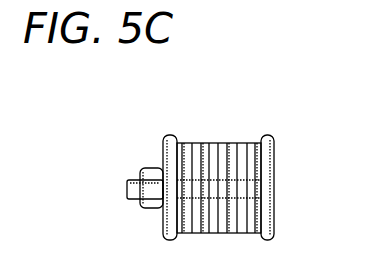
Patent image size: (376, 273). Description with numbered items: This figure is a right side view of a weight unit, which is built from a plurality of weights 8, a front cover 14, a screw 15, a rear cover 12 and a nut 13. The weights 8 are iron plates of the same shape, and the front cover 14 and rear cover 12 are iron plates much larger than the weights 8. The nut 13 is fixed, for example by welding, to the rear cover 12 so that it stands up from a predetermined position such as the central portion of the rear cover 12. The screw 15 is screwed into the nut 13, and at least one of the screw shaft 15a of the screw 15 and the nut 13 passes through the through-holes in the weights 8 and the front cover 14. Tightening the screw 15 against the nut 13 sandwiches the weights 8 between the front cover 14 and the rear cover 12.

The weights 8 is at (206, 146).
The rear cover 12 is at (267, 178).
The nut 13 is at (252, 146).
The front cover 14 is at (170, 232).
The screw 15 is at (133, 184).
The screw shaft 15a is at (182, 145).